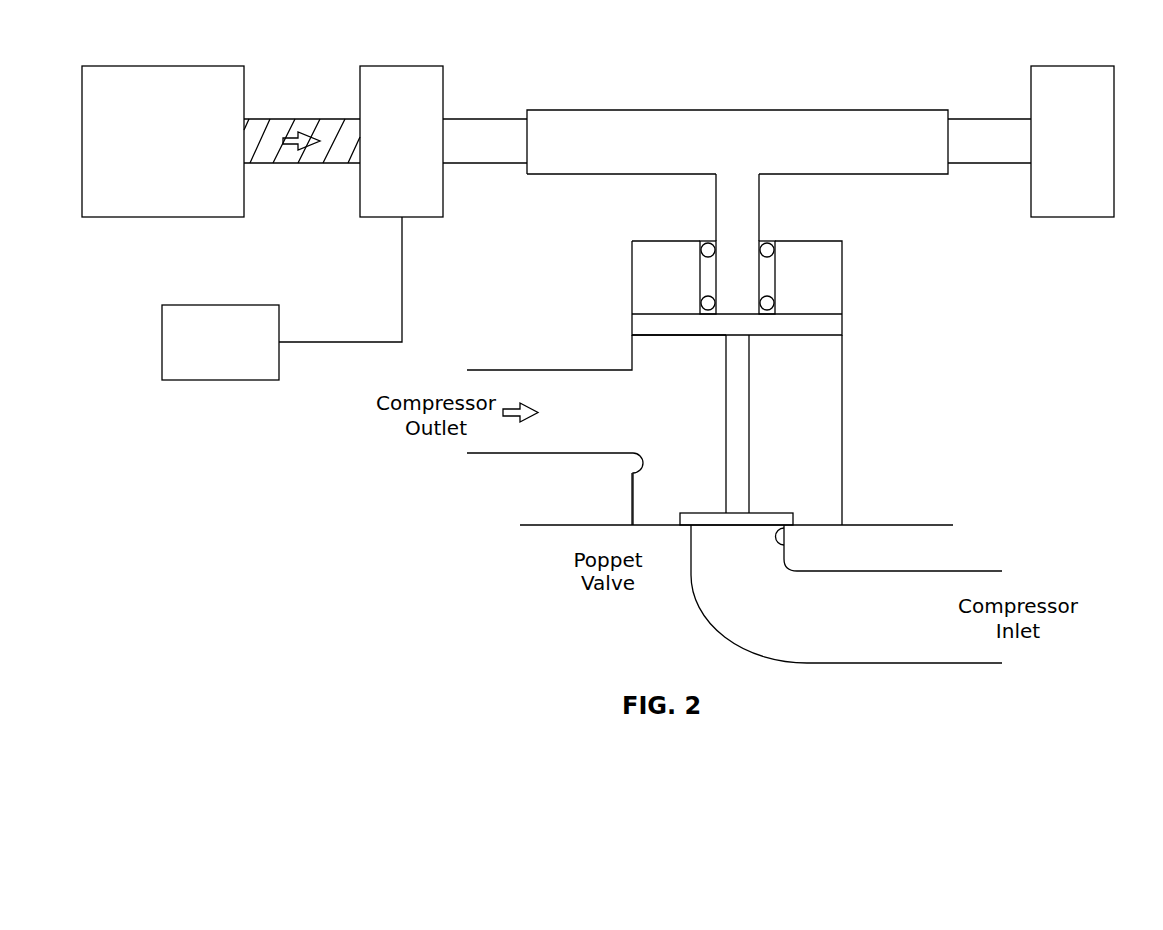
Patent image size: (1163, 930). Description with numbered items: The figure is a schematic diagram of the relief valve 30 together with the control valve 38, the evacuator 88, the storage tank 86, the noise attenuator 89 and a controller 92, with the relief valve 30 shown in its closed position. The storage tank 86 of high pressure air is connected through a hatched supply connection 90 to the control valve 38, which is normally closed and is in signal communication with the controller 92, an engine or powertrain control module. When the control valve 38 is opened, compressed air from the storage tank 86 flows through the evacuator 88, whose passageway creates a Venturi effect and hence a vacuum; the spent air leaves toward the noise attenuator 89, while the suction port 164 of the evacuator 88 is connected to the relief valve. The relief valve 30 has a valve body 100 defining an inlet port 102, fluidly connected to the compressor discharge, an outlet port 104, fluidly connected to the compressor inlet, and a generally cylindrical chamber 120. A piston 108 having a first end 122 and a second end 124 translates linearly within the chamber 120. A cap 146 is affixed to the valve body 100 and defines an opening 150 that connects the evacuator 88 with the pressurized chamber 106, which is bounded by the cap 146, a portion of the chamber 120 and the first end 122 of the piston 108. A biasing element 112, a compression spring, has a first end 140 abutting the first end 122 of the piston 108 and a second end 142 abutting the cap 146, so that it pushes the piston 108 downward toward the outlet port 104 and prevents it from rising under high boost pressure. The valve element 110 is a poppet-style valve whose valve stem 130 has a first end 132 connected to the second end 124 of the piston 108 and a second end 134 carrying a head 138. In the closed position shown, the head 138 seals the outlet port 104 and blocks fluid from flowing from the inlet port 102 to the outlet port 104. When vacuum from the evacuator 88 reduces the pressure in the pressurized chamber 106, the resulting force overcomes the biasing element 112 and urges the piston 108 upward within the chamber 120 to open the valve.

The relief valve 30 is at (900, 325).
The control valve 38 is at (415, 63).
The storage tank 86 is at (218, 63).
The evacuator 88 is at (918, 110).
The noise attenuator 89 is at (1083, 63).
The pressurized air supply line 90 is at (305, 118).
The controller 92 is at (248, 305).
The valve body 100 is at (842, 418).
The inlet port 102 is at (642, 473).
The outlet port 104 is at (785, 542).
The pressurized chamber 106 is at (673, 253).
The piston 108 is at (832, 325).
The valve element 110 is at (768, 382).
The biasing element 112 is at (707, 273).
The chamber 120 is at (817, 412).
The first end 122 is at (647, 313).
The second end 124 is at (670, 337).
The valve stem 130 is at (767, 424).
The first end 132 is at (740, 363).
The second end 134 is at (740, 505).
The head 138 is at (795, 520).
The first end 140 is at (773, 250).
The second end 142 is at (773, 303).
The cap 146 is at (660, 257).
The opening 150 is at (717, 275).
The suction port 164 is at (730, 210).